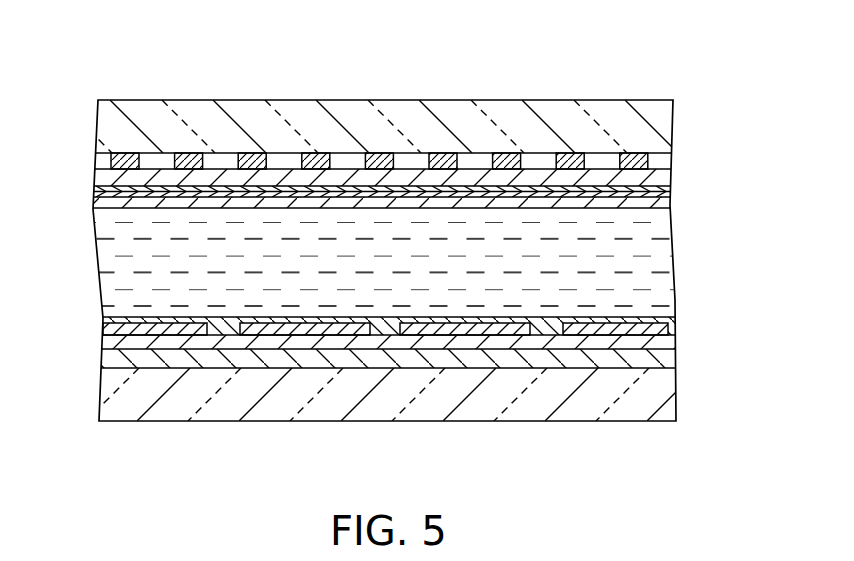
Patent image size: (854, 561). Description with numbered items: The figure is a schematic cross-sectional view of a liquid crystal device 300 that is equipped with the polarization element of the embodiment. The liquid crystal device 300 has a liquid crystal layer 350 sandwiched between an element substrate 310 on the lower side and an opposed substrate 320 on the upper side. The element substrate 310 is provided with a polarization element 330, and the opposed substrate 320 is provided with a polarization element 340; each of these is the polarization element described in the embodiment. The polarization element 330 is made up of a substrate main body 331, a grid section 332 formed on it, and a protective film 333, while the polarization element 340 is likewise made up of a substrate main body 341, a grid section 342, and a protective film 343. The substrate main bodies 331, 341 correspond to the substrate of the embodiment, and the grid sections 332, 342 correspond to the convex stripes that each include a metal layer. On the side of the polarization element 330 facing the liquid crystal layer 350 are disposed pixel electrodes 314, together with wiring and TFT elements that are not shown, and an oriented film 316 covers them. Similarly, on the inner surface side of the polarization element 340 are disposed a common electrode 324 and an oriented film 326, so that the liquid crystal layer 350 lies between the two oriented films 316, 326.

The liquid crystal device 300 is at (583, 86).
The element substrate 310 is at (85, 318).
The pixel electrodes 314 is at (173, 336).
The oriented film 316 is at (663, 317).
The opposed substrate 320 is at (85, 101).
The common electrode 324 is at (663, 191).
The oriented film 326 is at (663, 204).
The polarization element 330 is at (755, 333).
The substrate main body 331 is at (663, 400).
The grid section 332 is at (663, 361).
The protective film 333 is at (663, 343).
The polarization element 340 is at (755, 98).
The substrate main body 341 is at (663, 118).
The grid section 342 is at (660, 160).
The protective film 343 is at (663, 178).
The liquid crystal layer 350 is at (663, 262).